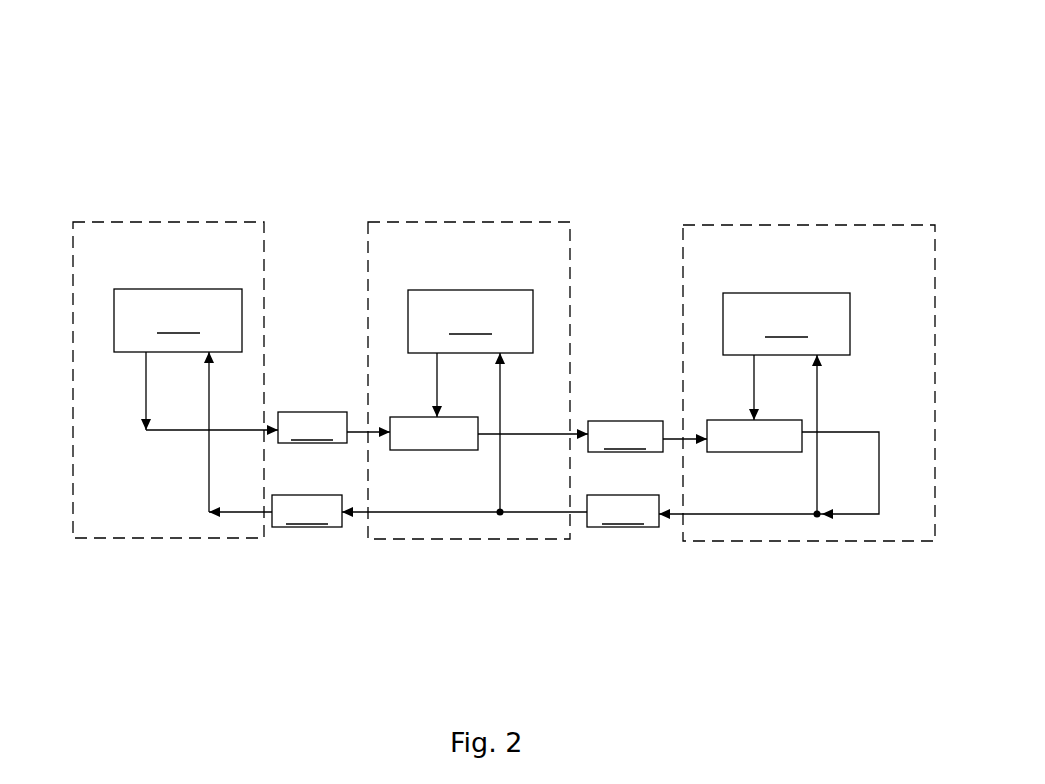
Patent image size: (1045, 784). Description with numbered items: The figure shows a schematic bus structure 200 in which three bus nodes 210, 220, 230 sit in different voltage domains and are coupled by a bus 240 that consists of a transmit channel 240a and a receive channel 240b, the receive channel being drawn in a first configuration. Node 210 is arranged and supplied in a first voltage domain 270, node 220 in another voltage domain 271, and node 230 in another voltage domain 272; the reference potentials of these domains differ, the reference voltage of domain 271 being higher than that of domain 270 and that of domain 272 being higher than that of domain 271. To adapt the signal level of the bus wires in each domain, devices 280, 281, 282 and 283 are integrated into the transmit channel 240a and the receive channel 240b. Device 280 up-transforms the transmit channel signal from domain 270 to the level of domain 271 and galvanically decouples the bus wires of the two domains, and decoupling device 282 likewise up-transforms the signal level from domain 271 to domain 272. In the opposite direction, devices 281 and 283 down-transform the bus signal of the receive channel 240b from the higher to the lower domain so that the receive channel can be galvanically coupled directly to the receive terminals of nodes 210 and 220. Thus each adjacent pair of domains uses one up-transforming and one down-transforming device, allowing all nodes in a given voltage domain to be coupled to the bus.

The bus structure 200 is at (480, 96).
The bus node 210 is at (178, 320).
The bus node 220 is at (470, 321).
The bus node 230 is at (786, 324).
The bus 240 is at (145, 434).
The transmit channel 240a is at (145, 402).
The receive channel 240b is at (752, 515).
The first voltage domain 270 is at (135, 221).
The voltage domain 271 is at (445, 222).
The voltage domain 272 is at (807, 225).
The device 280 is at (312, 427).
The device 281 is at (307, 511).
The decoupling device 282 is at (625, 436).
The device 283 is at (623, 511).